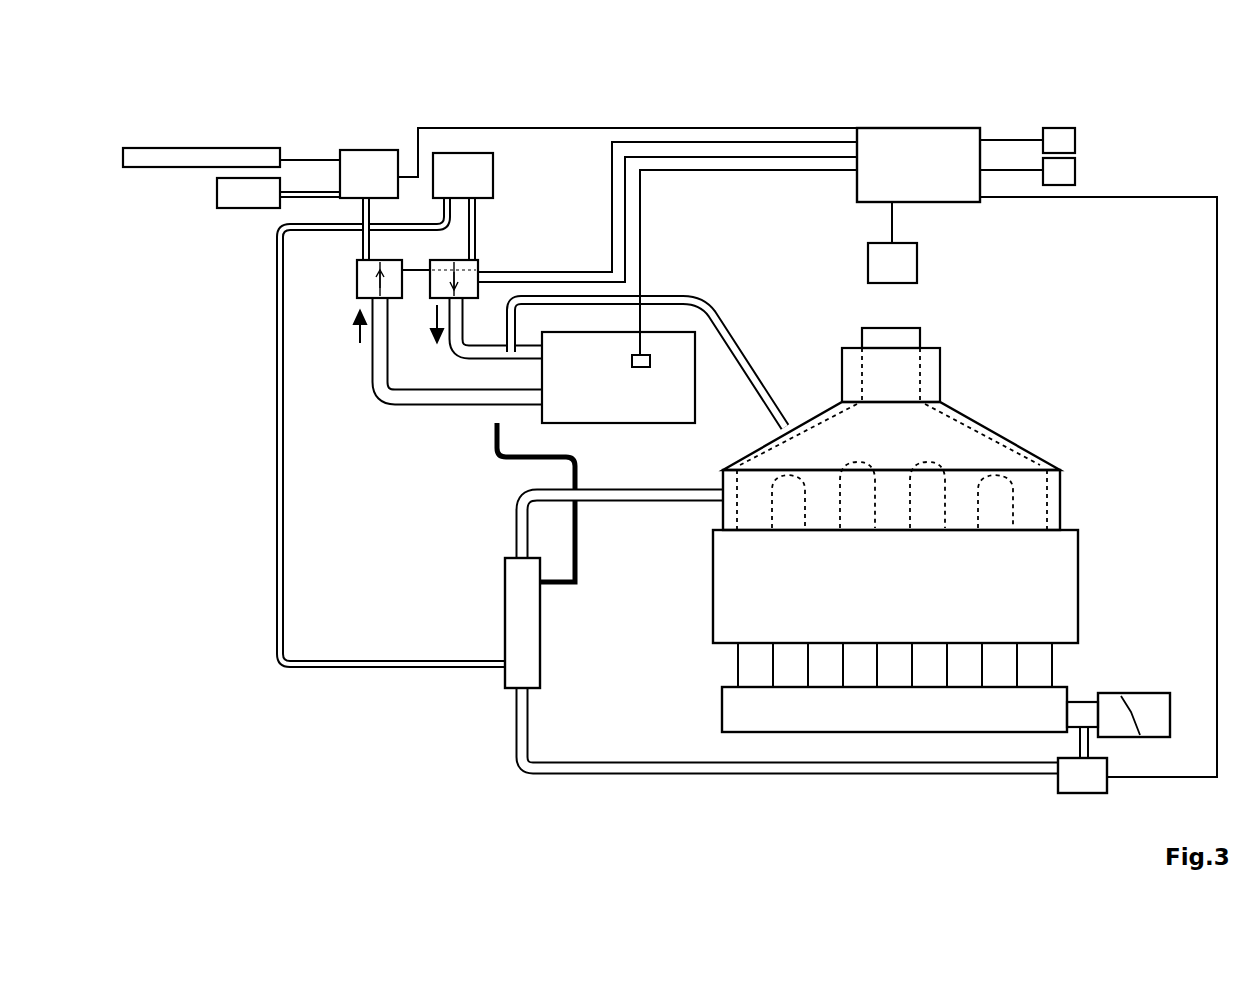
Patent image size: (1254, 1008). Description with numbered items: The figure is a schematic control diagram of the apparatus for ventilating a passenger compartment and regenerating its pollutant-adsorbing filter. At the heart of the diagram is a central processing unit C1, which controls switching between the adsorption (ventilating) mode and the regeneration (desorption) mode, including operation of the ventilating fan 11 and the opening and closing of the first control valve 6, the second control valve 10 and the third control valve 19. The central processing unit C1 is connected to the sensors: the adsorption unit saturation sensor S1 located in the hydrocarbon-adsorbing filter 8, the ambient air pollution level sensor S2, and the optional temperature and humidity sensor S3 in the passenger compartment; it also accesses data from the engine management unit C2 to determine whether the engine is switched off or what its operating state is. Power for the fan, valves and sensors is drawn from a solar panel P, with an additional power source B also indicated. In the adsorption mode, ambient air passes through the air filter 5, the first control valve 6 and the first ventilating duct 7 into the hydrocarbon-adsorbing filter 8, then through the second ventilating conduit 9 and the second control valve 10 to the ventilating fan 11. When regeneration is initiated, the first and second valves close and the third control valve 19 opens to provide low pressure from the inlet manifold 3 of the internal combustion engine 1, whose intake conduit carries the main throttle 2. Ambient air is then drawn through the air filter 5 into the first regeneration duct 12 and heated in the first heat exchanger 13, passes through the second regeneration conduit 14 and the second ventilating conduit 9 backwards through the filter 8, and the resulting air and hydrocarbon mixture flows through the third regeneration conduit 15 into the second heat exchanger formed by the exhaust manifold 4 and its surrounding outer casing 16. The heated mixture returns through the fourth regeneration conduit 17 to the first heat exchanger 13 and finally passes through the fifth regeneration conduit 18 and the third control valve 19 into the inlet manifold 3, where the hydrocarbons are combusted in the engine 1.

The internal combustion engine 1 is at (895, 608).
The main throttle 2 is at (1150, 700).
The inlet manifold 3 is at (870, 735).
The exhaust manifold 4 is at (988, 441).
The air filter 5 is at (495, 182).
The first control valve 6 is at (432, 292).
The first ventilating duct 7 is at (449, 346).
The hydrocarbon-adsorbing filter 8 is at (630, 423).
The second ventilating conduit 9 is at (378, 400).
The second control valve 10 is at (357, 292).
The ventilating fan 11 is at (352, 150).
The first regeneration duct 12 is at (277, 555).
The first heat exchanger 13 is at (505, 615).
The second regeneration conduit 14 is at (575, 580).
The third regeneration conduit 15 is at (705, 302).
The outer casing 16 is at (963, 402).
The fourth regeneration conduit 17 is at (650, 500).
The fifth regeneration conduit 18 is at (640, 760).
The third control valve 19 is at (1100, 775).
The solar panel P is at (145, 168).
The additional power source B is at (220, 208).
The central processing unit C1 is at (905, 128).
The engine management unit C2 is at (917, 262).
The adsorption unit saturation sensor S1 is at (651, 362).
The ambient air pollution level sensor S2 is at (1055, 128).
The temperature and humidity sensor S3 is at (1075, 172).